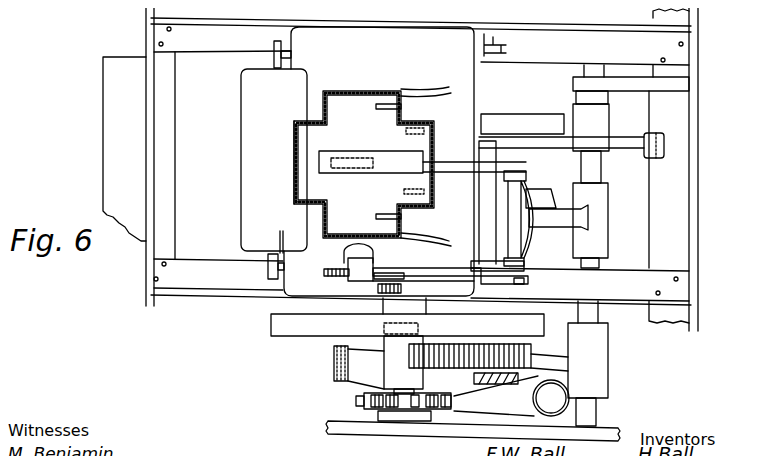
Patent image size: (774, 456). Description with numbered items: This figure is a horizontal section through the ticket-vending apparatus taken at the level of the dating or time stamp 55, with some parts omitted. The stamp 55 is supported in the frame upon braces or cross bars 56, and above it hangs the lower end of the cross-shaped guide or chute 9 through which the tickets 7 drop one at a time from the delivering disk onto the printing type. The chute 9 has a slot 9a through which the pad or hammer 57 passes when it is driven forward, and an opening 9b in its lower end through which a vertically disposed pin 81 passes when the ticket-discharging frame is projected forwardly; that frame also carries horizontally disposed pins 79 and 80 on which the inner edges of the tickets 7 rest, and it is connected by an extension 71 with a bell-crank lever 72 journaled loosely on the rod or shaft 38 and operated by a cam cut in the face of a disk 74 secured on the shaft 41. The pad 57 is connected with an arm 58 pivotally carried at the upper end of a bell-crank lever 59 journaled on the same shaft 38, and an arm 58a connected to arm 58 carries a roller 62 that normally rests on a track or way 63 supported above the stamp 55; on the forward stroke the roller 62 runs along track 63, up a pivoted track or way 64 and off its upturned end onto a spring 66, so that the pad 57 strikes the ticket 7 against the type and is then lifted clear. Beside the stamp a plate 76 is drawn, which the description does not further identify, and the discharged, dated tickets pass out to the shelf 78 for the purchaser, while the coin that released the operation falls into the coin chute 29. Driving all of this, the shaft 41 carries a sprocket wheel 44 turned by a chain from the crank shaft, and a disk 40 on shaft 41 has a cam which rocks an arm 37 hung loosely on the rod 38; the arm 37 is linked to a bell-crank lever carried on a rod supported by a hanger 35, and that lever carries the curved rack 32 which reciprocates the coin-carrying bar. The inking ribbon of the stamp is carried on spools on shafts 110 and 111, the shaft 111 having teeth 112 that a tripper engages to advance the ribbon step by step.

The tickets 7 is at (371, 153).
The guide or chute 9 is at (330, 88).
The slot in chute 9a is at (437, 150).
The opening in chute 9b is at (290, 143).
The coin chute 29 is at (333, 372).
The curved rack 32 is at (530, 352).
The hanger 35 is at (511, 394).
The arm 37 is at (584, 358).
The rod or shaft 38 is at (592, 410).
The disk 40 is at (272, 318).
The shaft 41 is at (405, 412).
The sprocket wheel 44 is at (363, 399).
The dating or time stamp 55 is at (395, 161).
The braces or cross bars 56 is at (421, 164).
The pad or hammer 57 is at (380, 157).
The arm 58 is at (473, 168).
The arm 58a is at (423, 234).
The bell-crank lever 59 is at (572, 221).
The roller 62 is at (345, 273).
The track or way 63 is at (505, 278).
The pivoted track or way 64 is at (450, 283).
The spring 66 is at (342, 261).
The extension 71 is at (565, 140).
The bell-crank lever 72 is at (604, 143).
The disk 74 is at (522, 124).
The plate 76 is at (274, 160).
The shelf 78 is at (124, 149).
The pin 79 is at (375, 106).
The pin 80 is at (418, 127).
The vertically disposed pin 81 is at (427, 130).
The shaft 110 is at (284, 54).
The shaft 111 is at (281, 252).
The teeth 112 is at (266, 271).